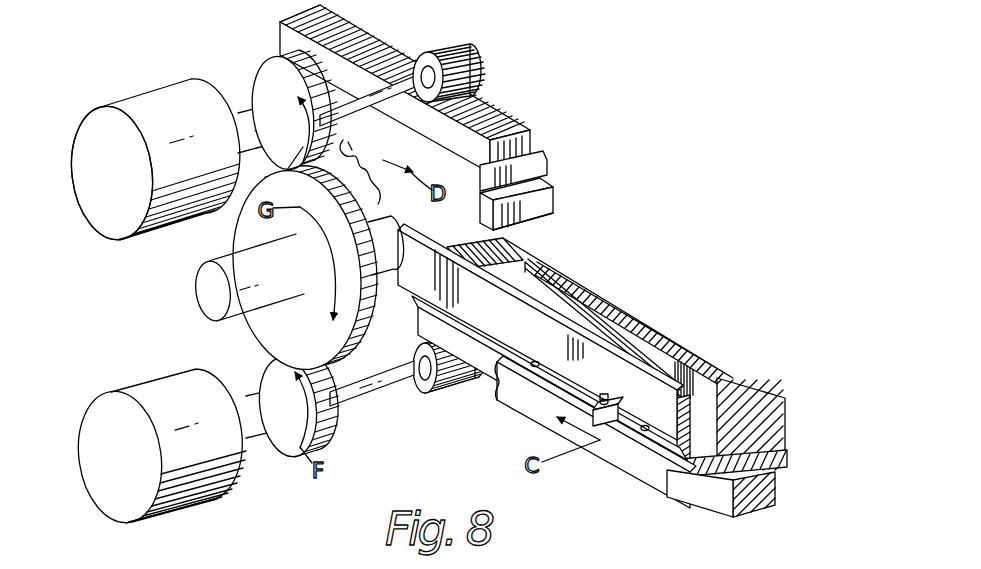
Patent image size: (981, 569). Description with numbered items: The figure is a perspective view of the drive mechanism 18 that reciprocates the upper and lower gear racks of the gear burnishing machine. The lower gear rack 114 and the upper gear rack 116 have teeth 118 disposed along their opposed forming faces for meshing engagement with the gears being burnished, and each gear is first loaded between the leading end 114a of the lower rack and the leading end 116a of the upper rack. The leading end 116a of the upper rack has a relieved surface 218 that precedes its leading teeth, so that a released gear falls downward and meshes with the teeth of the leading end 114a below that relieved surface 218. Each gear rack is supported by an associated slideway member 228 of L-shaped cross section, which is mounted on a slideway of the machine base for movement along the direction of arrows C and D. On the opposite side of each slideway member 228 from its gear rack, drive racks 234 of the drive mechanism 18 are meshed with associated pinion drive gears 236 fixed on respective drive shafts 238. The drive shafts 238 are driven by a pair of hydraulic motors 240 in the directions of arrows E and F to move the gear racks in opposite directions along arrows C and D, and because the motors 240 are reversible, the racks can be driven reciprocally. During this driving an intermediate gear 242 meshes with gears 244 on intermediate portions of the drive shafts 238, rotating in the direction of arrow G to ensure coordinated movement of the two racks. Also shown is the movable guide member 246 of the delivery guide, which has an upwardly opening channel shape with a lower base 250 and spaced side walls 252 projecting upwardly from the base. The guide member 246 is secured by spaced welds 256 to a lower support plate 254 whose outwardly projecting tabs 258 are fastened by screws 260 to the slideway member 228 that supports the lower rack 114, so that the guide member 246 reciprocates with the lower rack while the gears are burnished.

The drive mechanism 18 is at (100, 96).
The lower gear rack 114 is at (770, 425).
The leading end of lower gear rack 114a is at (528, 258).
The upper gear rack 116 is at (356, 170).
The leading end of upper gear rack 116a is at (550, 200).
The teeth 118 is at (647, 317).
The relieved surface 218 is at (547, 217).
The slideway member 228 is at (527, 170).
The drive rack 234 is at (500, 118).
The pinion drive gear 236 is at (463, 393).
The drive shaft 238 is at (383, 398).
The hydraulic motor 240 is at (107, 213).
The intermediate gear 242 is at (250, 230).
The gear 244 is at (270, 85).
The movable guide member 246 is at (430, 290).
The lower base 250 is at (713, 438).
The side wall 252 is at (695, 368).
The lower support plate 254 is at (697, 452).
The weld 256 is at (535, 367).
The tab 258 is at (610, 426).
The screw 260 is at (605, 400).